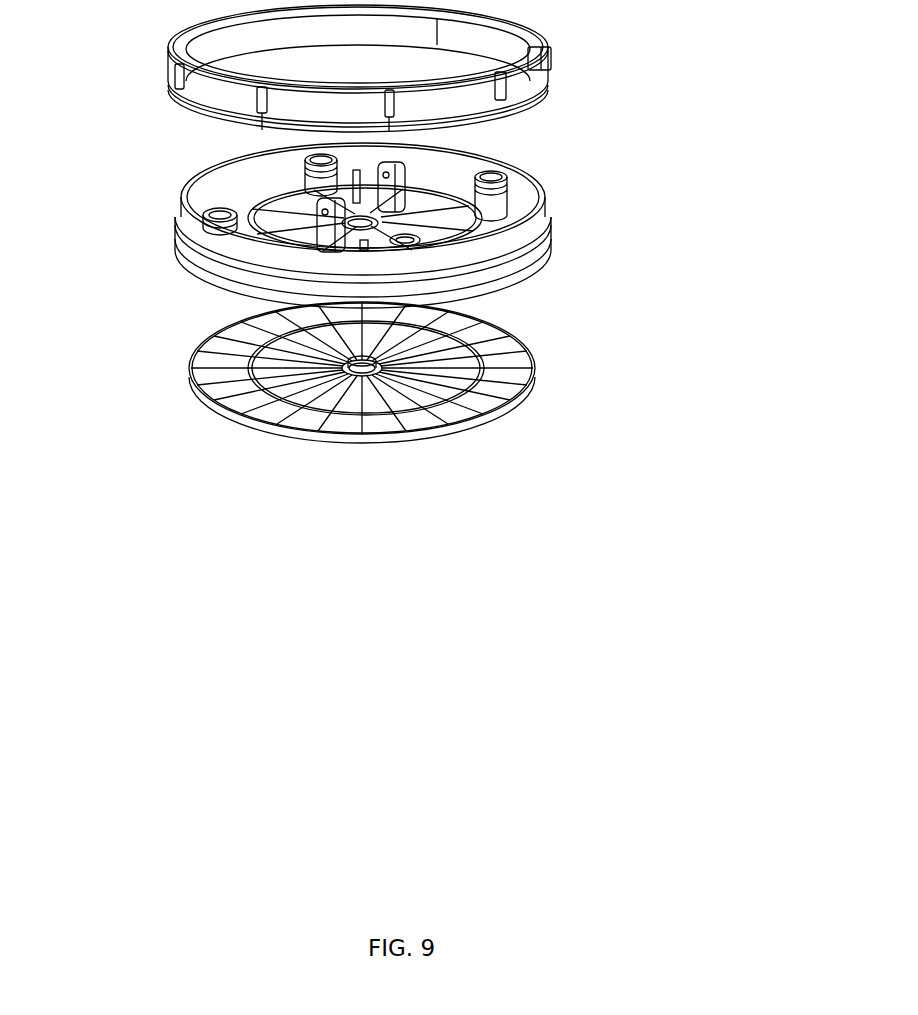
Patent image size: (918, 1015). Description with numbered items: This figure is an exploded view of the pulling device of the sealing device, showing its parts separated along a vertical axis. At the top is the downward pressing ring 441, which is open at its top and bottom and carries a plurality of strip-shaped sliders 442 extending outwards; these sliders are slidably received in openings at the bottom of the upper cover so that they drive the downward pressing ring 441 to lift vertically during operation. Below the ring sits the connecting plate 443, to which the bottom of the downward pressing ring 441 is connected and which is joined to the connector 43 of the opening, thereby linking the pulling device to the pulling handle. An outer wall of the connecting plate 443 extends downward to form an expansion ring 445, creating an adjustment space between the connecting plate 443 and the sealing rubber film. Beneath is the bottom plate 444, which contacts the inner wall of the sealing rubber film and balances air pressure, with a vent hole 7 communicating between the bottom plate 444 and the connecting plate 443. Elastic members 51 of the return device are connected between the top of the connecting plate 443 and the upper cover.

The vent hole 7 is at (366, 372).
The connector 43 is at (222, 285).
The elastic member 51 is at (212, 220).
The downward pressing ring 441 is at (545, 102).
The strip-shaped slider 442 is at (553, 66).
The connecting plate 443 is at (483, 257).
The bottom plate 444 is at (450, 428).
The expansion ring 445 is at (522, 117).